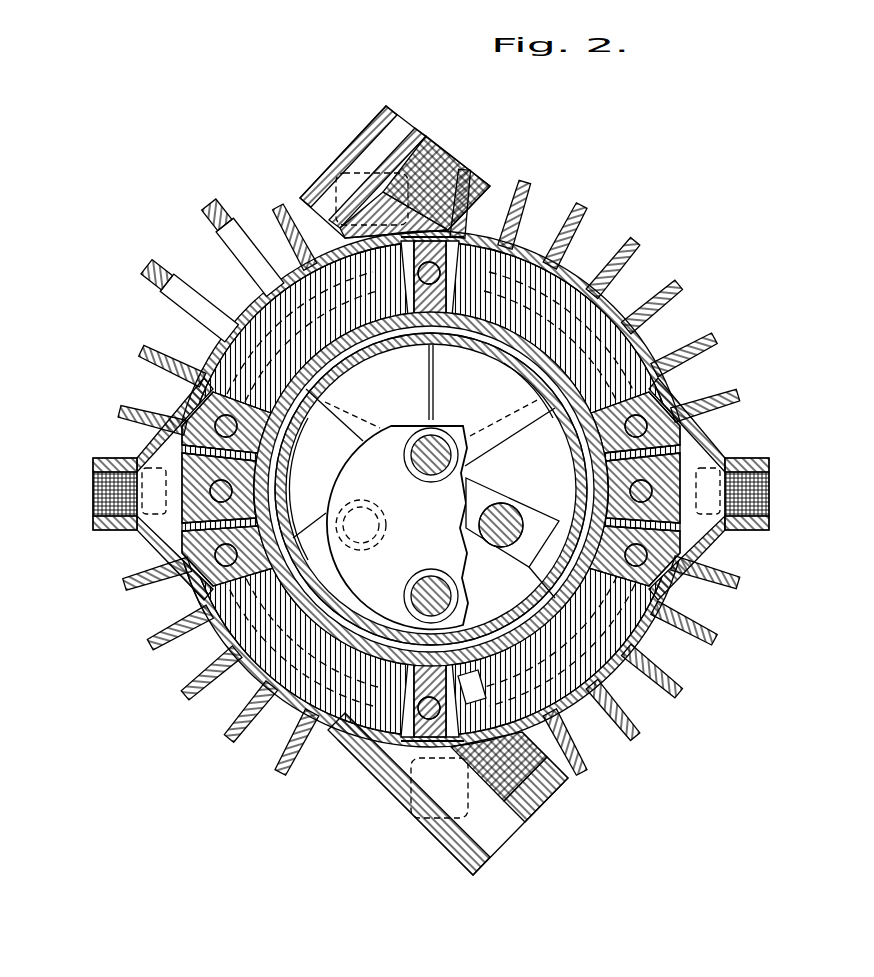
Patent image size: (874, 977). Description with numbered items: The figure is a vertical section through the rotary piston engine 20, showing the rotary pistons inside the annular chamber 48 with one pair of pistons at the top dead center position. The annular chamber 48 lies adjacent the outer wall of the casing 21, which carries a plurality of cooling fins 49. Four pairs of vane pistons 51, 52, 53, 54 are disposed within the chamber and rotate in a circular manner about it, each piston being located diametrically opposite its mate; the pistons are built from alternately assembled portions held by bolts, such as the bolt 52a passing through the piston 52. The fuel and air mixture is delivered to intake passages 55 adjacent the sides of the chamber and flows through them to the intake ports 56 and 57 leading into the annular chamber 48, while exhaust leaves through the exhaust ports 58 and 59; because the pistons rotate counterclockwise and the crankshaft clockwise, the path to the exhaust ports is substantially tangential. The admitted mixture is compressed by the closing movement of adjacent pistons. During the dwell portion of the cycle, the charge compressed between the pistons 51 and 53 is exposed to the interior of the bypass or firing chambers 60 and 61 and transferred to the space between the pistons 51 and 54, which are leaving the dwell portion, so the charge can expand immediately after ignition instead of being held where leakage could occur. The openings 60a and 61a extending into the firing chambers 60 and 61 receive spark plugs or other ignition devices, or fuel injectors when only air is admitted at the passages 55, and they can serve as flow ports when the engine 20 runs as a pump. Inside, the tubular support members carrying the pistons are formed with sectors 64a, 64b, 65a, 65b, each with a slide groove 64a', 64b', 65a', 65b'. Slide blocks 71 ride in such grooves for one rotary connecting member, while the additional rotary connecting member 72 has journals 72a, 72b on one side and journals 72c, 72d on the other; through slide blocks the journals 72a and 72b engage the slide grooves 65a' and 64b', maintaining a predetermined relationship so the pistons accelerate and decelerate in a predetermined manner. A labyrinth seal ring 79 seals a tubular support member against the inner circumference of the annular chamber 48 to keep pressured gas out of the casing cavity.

The engine 20 is at (630, 228).
The casing 21 is at (655, 306).
The annular chamber 48 is at (571, 694).
The cooling fins 49 is at (734, 386).
The vane piston 51 is at (700, 474).
The vane piston 52 is at (444, 248).
The bolt 52a is at (460, 238).
The vane piston 53 is at (670, 576).
The vane piston 54 is at (660, 402).
The intake passage 55 is at (226, 328).
The intake port 56 is at (414, 382).
The intake port 57 is at (462, 680).
The exhaust port 58 is at (338, 154).
The exhaust port 59 is at (506, 832).
The firing chamber 60 is at (738, 452).
The opening 60a is at (762, 489).
The firing chamber 61 is at (108, 452).
The opening 61a is at (90, 492).
The sector 64a is at (497, 387).
The slide groove 64a' is at (505, 414).
The sector 64b is at (318, 489).
The slide groove 64b' is at (339, 548).
The sector 65a is at (515, 437).
The slide groove 65a' is at (515, 582).
The sector 65b is at (351, 405).
The slide groove 65b' is at (374, 411).
The slide block 71 is at (312, 520).
The additional rotary connecting member 72 is at (434, 544).
The journal 72a is at (506, 504).
The journal 72b is at (366, 512).
The journal 72c is at (404, 588).
The journal 72d is at (430, 440).
The labyrinth seal ring 79 is at (216, 630).